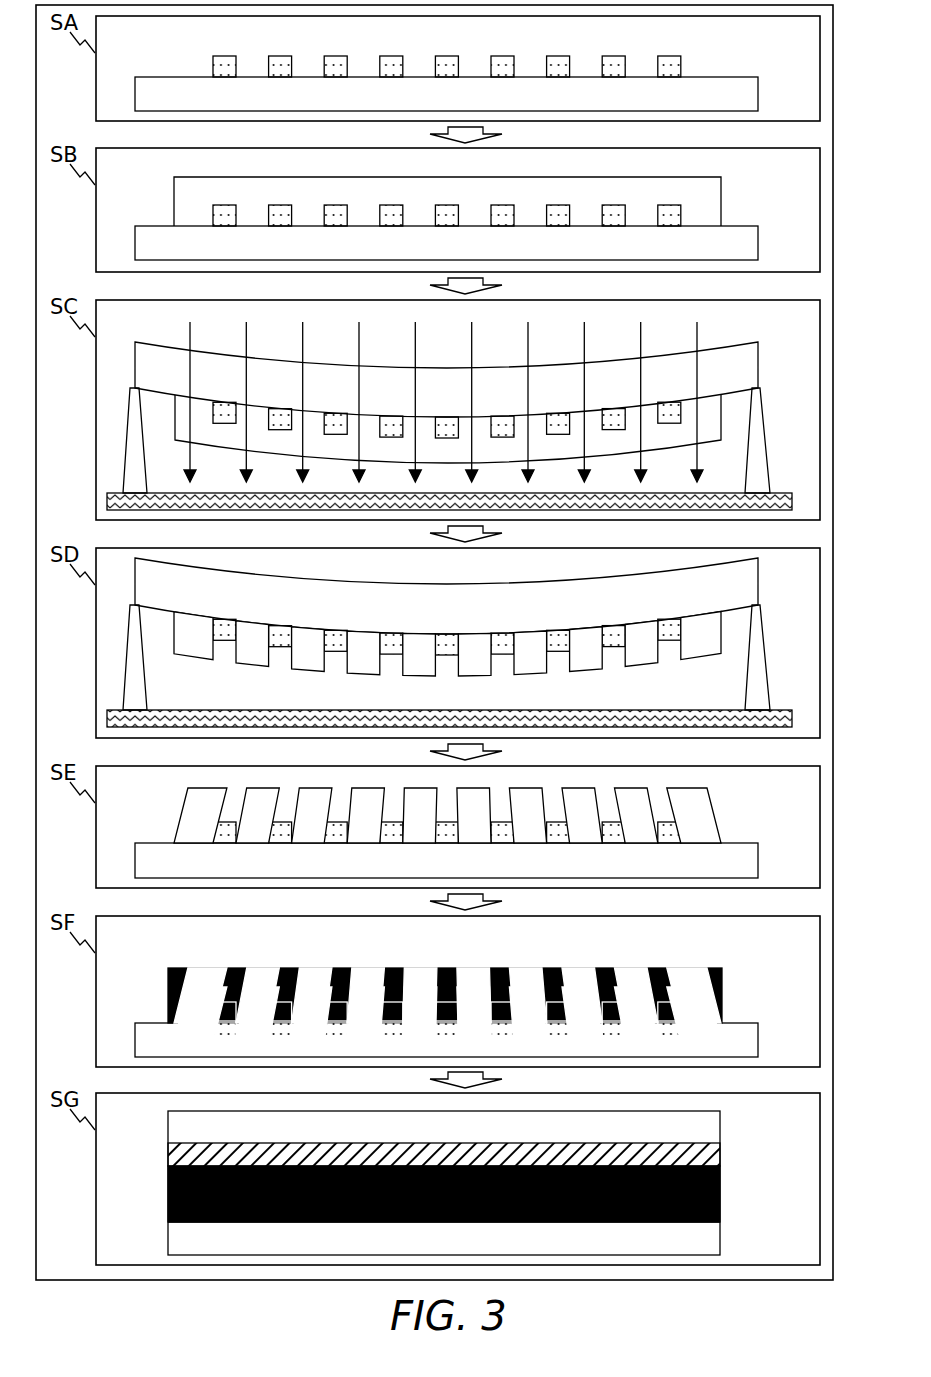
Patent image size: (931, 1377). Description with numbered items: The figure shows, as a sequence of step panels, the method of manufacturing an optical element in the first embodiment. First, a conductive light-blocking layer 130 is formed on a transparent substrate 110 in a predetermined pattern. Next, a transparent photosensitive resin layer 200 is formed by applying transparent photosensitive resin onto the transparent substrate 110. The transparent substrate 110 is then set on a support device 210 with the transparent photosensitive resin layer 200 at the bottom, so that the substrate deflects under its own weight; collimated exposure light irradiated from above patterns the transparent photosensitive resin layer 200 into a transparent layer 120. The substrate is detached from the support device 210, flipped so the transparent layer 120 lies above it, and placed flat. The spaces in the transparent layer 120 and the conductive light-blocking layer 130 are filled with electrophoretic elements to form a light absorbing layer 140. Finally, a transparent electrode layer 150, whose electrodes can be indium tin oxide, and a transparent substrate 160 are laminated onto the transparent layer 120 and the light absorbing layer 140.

The transparent substrate 110 is at (752, 100).
The conductive light-blocking layer 130 is at (661, 55).
The transparent photosensitive resin layer 200 is at (721, 197).
The support device 210 is at (758, 460).
The transparent layer 120 is at (642, 660).
The light absorbing layer 140 is at (553, 967).
The transparent electrode layer 150 is at (715, 1153).
The transparent substrate 160 is at (715, 1125).